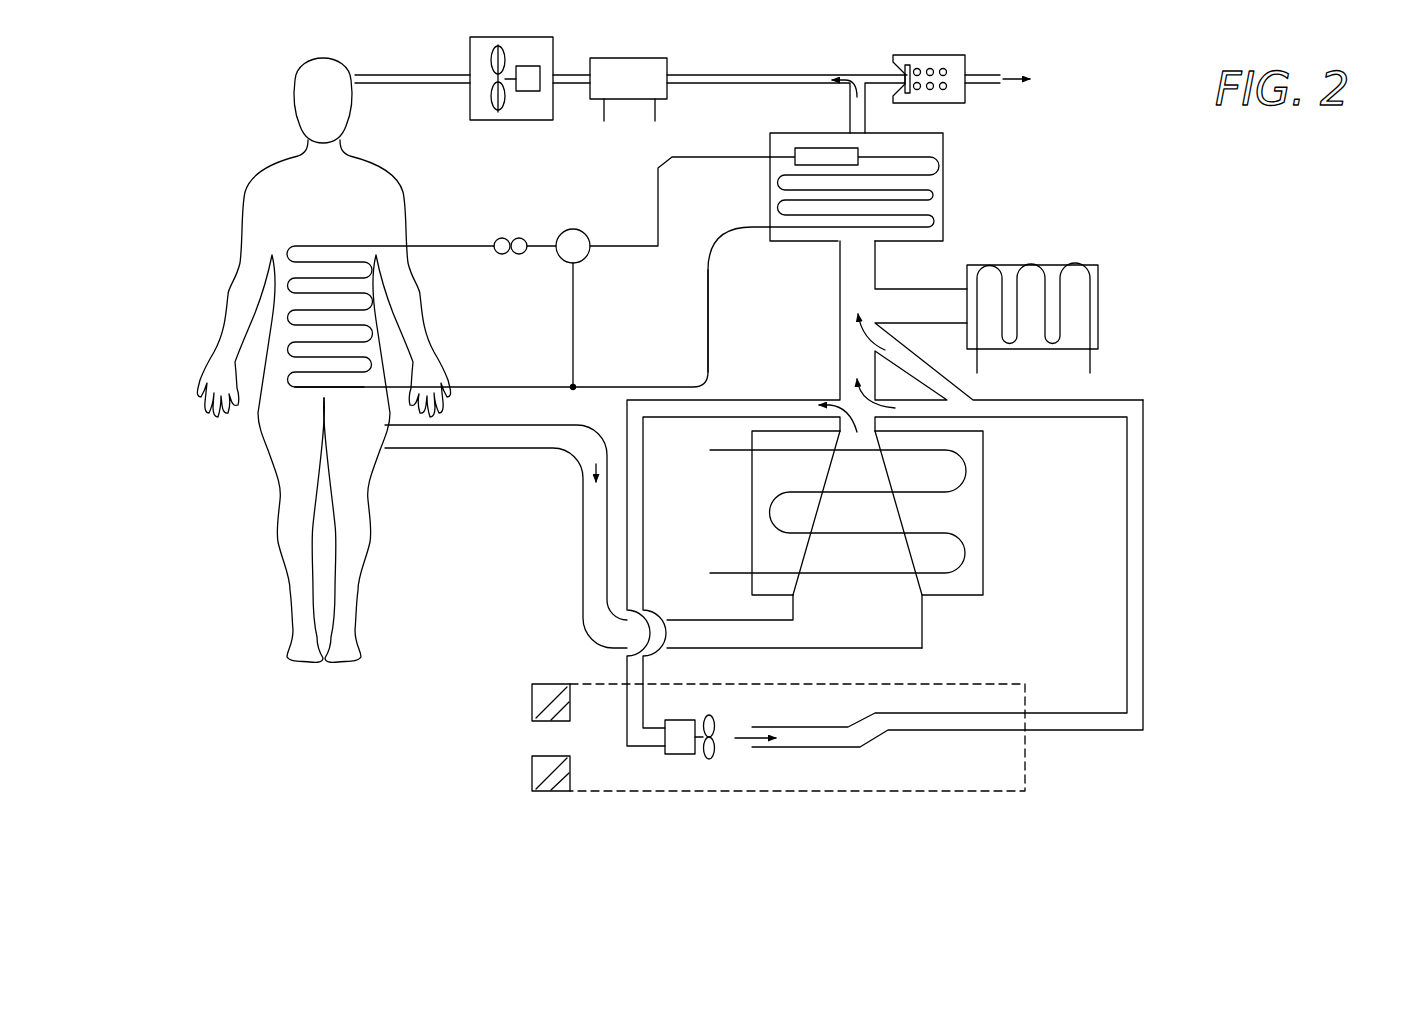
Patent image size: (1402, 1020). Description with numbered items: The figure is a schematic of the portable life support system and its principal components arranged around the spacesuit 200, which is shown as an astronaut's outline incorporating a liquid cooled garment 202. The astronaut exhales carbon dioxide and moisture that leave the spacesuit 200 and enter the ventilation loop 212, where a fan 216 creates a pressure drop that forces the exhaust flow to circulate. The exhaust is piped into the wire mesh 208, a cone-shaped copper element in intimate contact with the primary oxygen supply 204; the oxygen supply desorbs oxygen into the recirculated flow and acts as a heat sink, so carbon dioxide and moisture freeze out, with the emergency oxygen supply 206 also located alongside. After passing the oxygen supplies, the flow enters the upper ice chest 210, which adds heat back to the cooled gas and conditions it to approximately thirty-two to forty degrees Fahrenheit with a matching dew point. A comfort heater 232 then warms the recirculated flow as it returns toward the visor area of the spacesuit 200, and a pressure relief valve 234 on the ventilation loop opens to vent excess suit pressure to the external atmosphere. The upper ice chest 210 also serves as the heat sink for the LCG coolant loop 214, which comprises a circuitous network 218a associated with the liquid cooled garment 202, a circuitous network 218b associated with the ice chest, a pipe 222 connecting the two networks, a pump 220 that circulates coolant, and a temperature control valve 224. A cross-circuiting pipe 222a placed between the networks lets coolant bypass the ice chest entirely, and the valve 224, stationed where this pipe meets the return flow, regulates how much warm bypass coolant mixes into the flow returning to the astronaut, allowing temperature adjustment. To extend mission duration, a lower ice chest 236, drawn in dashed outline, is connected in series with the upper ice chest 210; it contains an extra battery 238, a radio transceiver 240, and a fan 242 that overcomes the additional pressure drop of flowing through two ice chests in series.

The spacesuit 200 is at (228, 293).
The liquid cooled garment 202 is at (290, 390).
The primary oxygen supply 204 is at (983, 560).
The emergency oxygen supply 206 is at (1098, 302).
The wire mesh 208 is at (922, 582).
The upper ice chest 210 is at (943, 215).
The ventilation loop 212 is at (578, 452).
The LCG coolant loop 214 is at (729, 266).
The fan 216 is at (485, 120).
The circuitous network 218a is at (372, 365).
The circuitous network 218b is at (773, 175).
The pump 220 is at (502, 238).
The pipe 222 is at (720, 371).
The cross-circuiting pipe 222a is at (575, 330).
The temperature control valve 224 is at (585, 258).
The comfort heater 232 is at (667, 97).
The pressure relief valve 234 is at (955, 103).
The lower ice chest 236 is at (1020, 680).
The extra battery 238 is at (532, 702).
The radio transceiver 240 is at (532, 775).
The fan 242 is at (682, 720).